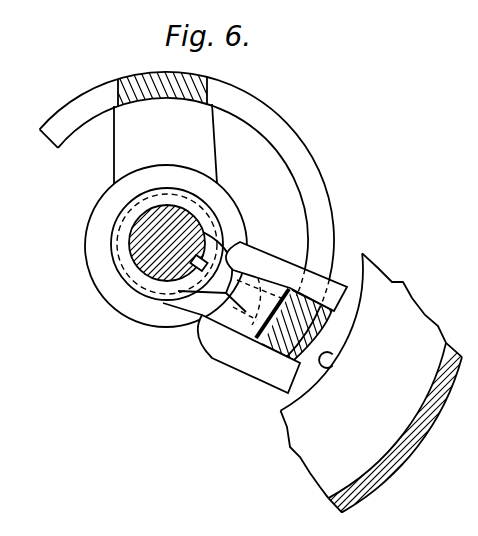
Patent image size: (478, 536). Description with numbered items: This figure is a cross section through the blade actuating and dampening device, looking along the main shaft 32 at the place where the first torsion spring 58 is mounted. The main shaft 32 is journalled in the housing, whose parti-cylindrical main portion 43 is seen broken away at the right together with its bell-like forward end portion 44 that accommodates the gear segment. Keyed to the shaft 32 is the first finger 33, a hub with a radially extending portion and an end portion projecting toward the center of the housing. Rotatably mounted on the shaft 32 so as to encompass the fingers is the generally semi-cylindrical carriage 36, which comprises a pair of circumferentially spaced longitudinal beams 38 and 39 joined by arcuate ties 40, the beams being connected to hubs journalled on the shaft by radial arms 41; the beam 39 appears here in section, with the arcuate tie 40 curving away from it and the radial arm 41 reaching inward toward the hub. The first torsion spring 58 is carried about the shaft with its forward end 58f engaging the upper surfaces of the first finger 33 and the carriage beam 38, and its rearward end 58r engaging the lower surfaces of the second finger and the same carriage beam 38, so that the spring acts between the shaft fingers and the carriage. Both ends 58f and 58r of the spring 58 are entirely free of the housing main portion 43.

The main shaft 32 is at (150, 258).
The first finger 33 is at (262, 290).
The carriage 36 is at (276, 104).
The longitudinal beam 38 is at (320, 327).
The longitudinal beam 39 is at (152, 94).
The arcuate tie 40 is at (288, 142).
The radial arm 41 is at (134, 139).
The main portion of housing 43 is at (322, 362).
The bell-like forward end portion 44 is at (403, 432).
The first torsion spring 58 is at (104, 263).
The forward end of torsion spring 58f is at (323, 280).
The rearward end of torsion spring 58r is at (260, 363).